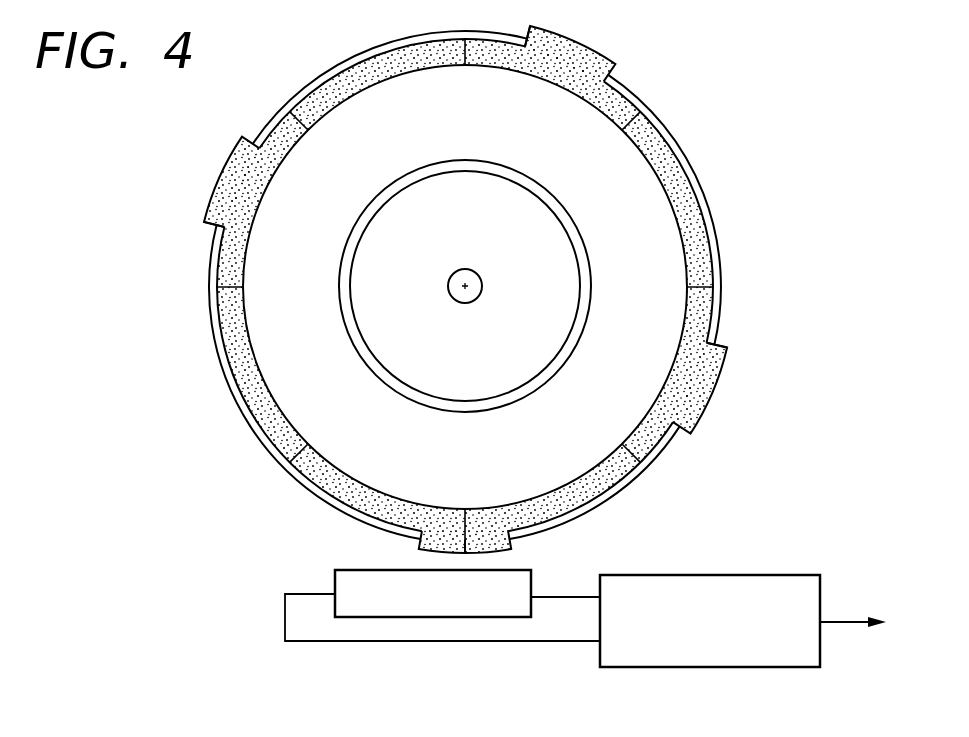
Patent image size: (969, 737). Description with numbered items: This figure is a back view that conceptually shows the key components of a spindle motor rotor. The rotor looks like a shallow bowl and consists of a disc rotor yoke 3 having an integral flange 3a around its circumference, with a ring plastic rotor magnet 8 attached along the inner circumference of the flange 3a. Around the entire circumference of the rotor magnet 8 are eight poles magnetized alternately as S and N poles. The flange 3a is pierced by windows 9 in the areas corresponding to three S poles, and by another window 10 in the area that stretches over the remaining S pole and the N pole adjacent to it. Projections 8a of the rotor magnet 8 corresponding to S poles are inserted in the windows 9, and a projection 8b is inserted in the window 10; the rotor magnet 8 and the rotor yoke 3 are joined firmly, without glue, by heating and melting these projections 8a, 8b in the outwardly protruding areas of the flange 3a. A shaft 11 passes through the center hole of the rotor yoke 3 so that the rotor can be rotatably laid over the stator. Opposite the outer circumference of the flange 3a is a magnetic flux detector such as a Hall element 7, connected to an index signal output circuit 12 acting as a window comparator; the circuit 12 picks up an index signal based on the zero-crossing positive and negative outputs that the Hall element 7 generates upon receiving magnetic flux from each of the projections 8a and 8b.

The rotor yoke 3 is at (331, 61).
The integral flange 3a is at (415, 34).
The Hall element 7 is at (540, 592).
The rotor magnet 8 is at (682, 143).
The projections 8a is at (232, 163).
The projection 8b is at (418, 550).
The windows 9 is at (205, 213).
The window 10 is at (490, 556).
The shaft 11 is at (451, 295).
The index signal output circuit 12 is at (745, 575).